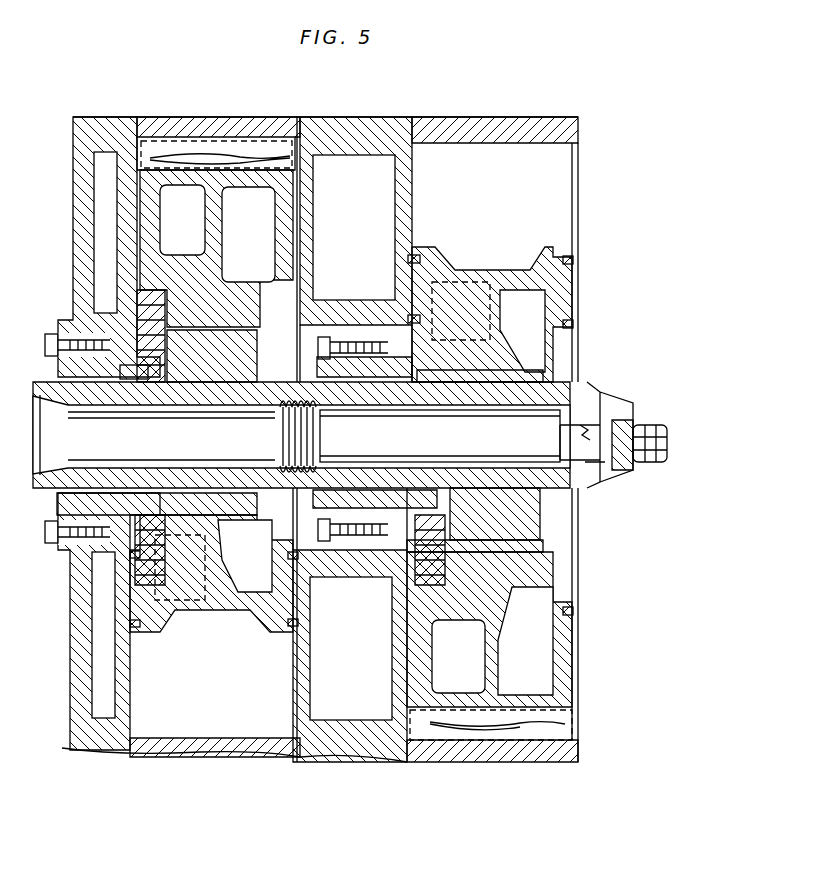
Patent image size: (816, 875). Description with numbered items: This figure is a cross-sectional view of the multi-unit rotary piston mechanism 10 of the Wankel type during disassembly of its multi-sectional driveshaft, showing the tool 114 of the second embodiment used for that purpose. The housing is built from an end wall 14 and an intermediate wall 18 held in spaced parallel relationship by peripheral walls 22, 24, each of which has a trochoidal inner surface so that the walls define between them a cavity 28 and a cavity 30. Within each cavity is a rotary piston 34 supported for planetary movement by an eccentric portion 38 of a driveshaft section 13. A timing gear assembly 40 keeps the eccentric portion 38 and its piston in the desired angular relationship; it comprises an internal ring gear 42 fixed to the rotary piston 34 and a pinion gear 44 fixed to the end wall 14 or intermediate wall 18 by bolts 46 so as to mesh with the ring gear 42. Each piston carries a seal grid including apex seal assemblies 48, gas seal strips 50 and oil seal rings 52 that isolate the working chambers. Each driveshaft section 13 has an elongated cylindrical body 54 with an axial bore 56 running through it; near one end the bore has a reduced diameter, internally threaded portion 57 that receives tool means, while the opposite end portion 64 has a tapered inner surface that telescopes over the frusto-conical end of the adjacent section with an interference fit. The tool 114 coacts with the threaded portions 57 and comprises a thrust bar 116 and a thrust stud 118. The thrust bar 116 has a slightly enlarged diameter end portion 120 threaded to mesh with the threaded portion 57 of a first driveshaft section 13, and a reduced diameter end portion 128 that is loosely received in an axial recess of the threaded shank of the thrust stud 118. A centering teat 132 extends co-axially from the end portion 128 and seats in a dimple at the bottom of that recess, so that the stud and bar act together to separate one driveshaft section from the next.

The rotary piston mechanism 10 is at (605, 110).
The driveshaft section 13 is at (128, 372).
The end wall 14 is at (75, 206).
The intermediate wall 18 is at (383, 117).
The peripheral wall 22 is at (193, 117).
The peripheral wall 24 is at (524, 117).
The cavity 28 is at (215, 692).
The cavity 30 is at (510, 182).
The rotary piston 34 is at (512, 246).
The eccentric portion 38 is at (212, 352).
The timing gear assembly 40 is at (158, 320).
The internal ring gear 42 is at (136, 290).
The pinion gear 44 is at (468, 470).
The bolt 46 is at (48, 340).
The apex seal assembly 48 is at (248, 150).
The gas seal strip 50 is at (575, 258).
The oil seal ring 52 is at (300, 260).
The cylindrical body 54 is at (420, 250).
The axial bore 56 is at (428, 406).
The threaded portion 57 is at (252, 398).
The end portion 64 is at (362, 398).
The tool 114 is at (652, 396).
The thrust bar 116 is at (512, 464).
The thrust stud 118 is at (667, 440).
The enlarged diameter end portion 120 is at (270, 438).
The reduced diameter end portion 128 is at (594, 470).
The centering teat 132 is at (625, 462).